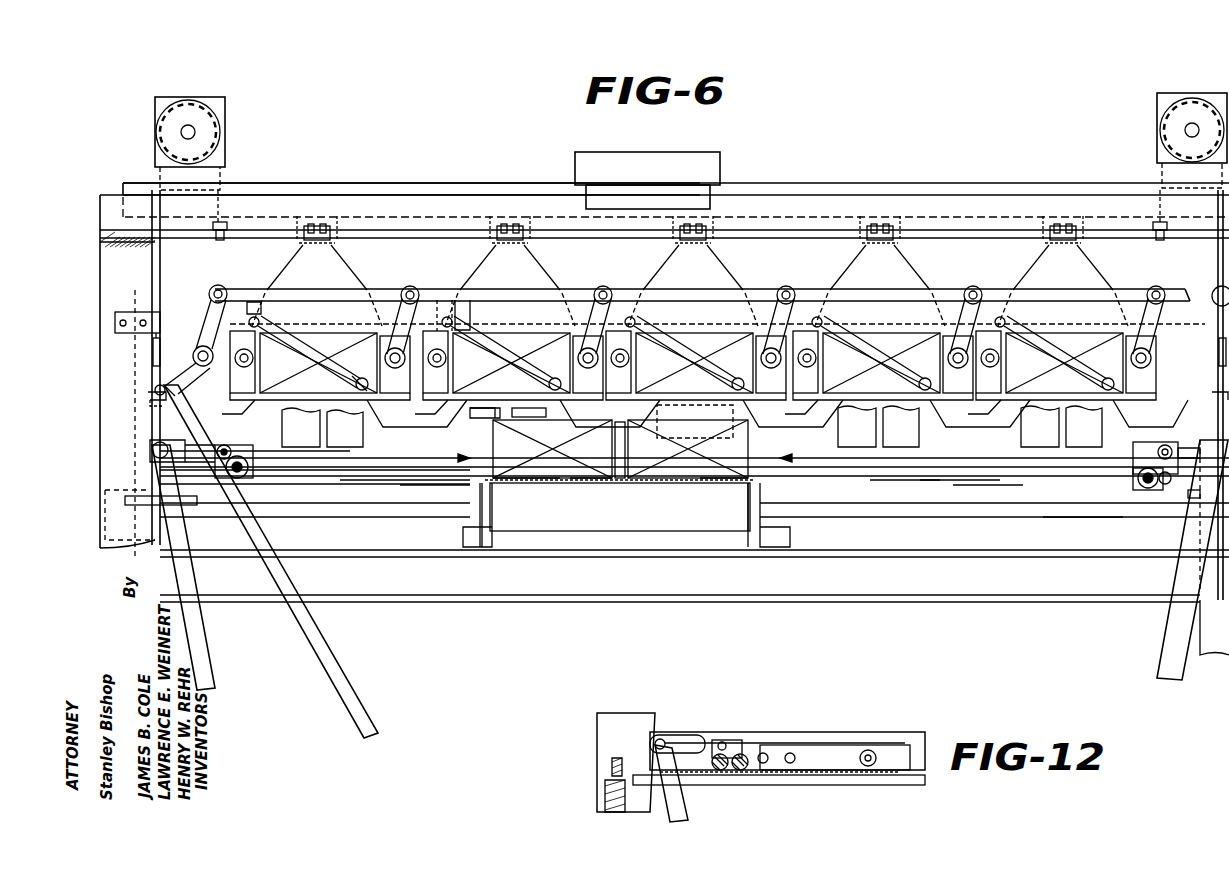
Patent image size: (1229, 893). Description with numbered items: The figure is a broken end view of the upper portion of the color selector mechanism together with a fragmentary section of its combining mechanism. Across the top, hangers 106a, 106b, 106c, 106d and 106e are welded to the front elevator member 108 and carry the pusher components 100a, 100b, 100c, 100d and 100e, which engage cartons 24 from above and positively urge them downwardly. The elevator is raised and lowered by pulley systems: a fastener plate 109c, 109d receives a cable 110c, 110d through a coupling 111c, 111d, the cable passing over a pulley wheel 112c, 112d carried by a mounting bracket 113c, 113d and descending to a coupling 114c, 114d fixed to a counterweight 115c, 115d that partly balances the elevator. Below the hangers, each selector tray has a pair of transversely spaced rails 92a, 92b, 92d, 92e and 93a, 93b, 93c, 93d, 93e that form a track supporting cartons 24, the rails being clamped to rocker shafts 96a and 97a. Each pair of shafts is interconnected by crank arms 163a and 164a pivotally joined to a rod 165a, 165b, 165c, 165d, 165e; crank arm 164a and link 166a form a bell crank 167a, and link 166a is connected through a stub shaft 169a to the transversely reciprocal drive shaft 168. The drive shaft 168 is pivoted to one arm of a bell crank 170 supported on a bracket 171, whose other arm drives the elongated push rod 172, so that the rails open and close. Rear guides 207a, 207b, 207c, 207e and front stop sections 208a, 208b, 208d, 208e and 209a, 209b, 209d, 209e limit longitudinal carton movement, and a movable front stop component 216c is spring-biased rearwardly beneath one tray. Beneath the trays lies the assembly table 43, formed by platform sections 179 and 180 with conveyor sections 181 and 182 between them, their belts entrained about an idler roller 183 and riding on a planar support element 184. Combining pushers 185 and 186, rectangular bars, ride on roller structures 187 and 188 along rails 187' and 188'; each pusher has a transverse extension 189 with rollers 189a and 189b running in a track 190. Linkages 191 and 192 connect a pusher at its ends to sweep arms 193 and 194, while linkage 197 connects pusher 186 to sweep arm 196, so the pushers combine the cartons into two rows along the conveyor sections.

In FIG. 6, the carton 24 is at (570, 471).
In FIG. 6, the combining or assembly table 43 is at (988, 504).
In FIG. 6, the rail 92a is at (243, 412).
In FIG. 6, the rail 92b is at (441, 423).
In FIG. 6, the rail 92d is at (801, 416).
In FIG. 6, the rail 92e is at (991, 423).
In FIG. 6, the rail 93a is at (345, 428).
In FIG. 6, the rail 93b is at (586, 413).
In FIG. 6, the rail 93c is at (793, 414).
In FIG. 6, the rail 93d is at (980, 423).
In FIG. 6, the rail 93e is at (1150, 413).
In FIG. 6, the rocker shaft 96a is at (269, 362).
In FIG. 6, the rocker shaft 97a is at (354, 366).
In FIG. 6, the pusher component 100a is at (317, 283).
In FIG. 6, the pusher component 100b is at (518, 285).
In FIG. 6, the pusher component 100c is at (700, 285).
In FIG. 6, the pusher component 100d is at (888, 285).
In FIG. 6, the pusher component 100e is at (1070, 285).
In FIG. 6, the hanger 106a is at (340, 219).
In FIG. 6, the hanger 106b is at (506, 197).
In FIG. 6, the hanger 106c is at (722, 197).
In FIG. 6, the hanger 106d is at (890, 196).
In FIG. 6, the hanger 106e is at (1050, 197).
In FIG. 6, the front elevator member 108 is at (315, 158).
In FIG. 6, the fastener plate 109c is at (210, 228).
In FIG. 6, the fastener plate 109d is at (1150, 225).
In FIG. 6, the cable 110c is at (152, 285).
In FIG. 6, the cable 110d is at (1217, 272).
In FIG. 6, the ferrule or coupling 111c is at (222, 210).
In FIG. 6, the ferrule or coupling 111d is at (1158, 200).
In FIG. 6, the sheave or pulley wheel 112c is at (212, 130).
In FIG. 6, the sheave or pulley wheel 112d is at (1165, 120).
In FIG. 6, the mounting bracket 113c is at (220, 105).
In FIG. 6, the mounting bracket 113d is at (1180, 95).
In FIG. 6, the ferrule or coupling 114c is at (152, 350).
In FIG. 6, the ferrule or coupling 114d is at (1217, 345).
In FIG. 6, the counterweight 115c is at (148, 397).
In FIG. 6, the counterweight 115d is at (1210, 392).
In FIG. 6, the crank arm 163a is at (247, 299).
In FIG. 6, the crank arm 164a is at (417, 413).
In FIG. 6, the rod 165a is at (320, 358).
In FIG. 6, the rod 165b is at (513, 358).
In FIG. 6, the rod 165c is at (700, 343).
In FIG. 6, the rod 165d is at (887, 343).
In FIG. 6, the rod 165e is at (1070, 343).
In FIG. 6, the link 166a is at (395, 301).
In FIG. 6, the bell crank 167a is at (424, 317).
In FIG. 6, the drive shaft 168 is at (461, 297).
In FIG. 6, the stub shaft 169a is at (455, 300).
In FIG. 6, the bell crank 170 is at (212, 290).
In FIG. 6, the bracket 171 is at (215, 370).
In FIG. 6, the push rod 172 is at (340, 658).
In FIG. 6, the platform section 179 is at (360, 488).
In FIG. 12, the platform section 179 is at (905, 790).
In FIG. 6, the platform section 180 is at (905, 494).
In FIG. 6, the conveyor section 181 is at (540, 482).
In FIG. 6, the conveyor section 182 is at (698, 480).
In FIG. 6, the idler roller 183 is at (570, 520).
In FIG. 6, the planar support element 184 is at (580, 480).
In FIG. 6, the combining pusher 185 is at (250, 482).
In FIG. 12, the combining pusher 185 is at (752, 738).
In FIG. 6, the combining pusher 186 is at (1135, 480).
In FIG. 6, the roller structure 187 is at (208, 487).
In FIG. 12, the roller structure 187 is at (744, 786).
In FIG. 6, the rail 187' is at (315, 496).
In FIG. 12, the rail 187' is at (780, 790).
In FIG. 6, the roller structure 188 is at (1154, 498).
In FIG. 6, the rail 188' is at (1083, 498).
In FIG. 12, the transversely oriented extension 189 is at (825, 745).
In FIG. 12, the roller 189a is at (717, 772).
In FIG. 12, the roller 189b is at (868, 770).
In FIG. 12, the track 190 is at (815, 738).
In FIG. 6, the linkage 191 is at (152, 444).
In FIG. 12, the linkage 192 is at (700, 735).
In FIG. 6, the sweep arm 193 is at (212, 655).
In FIG. 12, the sweep arm 194 is at (668, 820).
In FIG. 6, the sweep arm 196 is at (1163, 665).
In FIG. 6, the linkage 197 is at (1180, 448).
In FIG. 6, the rear stop or guide 207a is at (410, 485).
In FIG. 6, the rear stop or guide 207b is at (556, 350).
In FIG. 6, the rear stop or guide 207c is at (690, 445).
In FIG. 6, the rear stop or guide 207e is at (951, 499).
In FIG. 6, the front stop section 208a is at (302, 450).
In FIG. 6, the front stop section 208b is at (480, 420).
In FIG. 6, the front stop section 208d is at (840, 455).
In FIG. 6, the front stop section 208e is at (1023, 455).
In FIG. 6, the front stop section 209a is at (350, 450).
In FIG. 6, the front stop section 209b is at (530, 420).
In FIG. 6, the front stop section 209d is at (874, 464).
In FIG. 6, the front stop section 209e is at (1072, 467).
In FIG. 6, the movable front stop component 216c is at (748, 492).